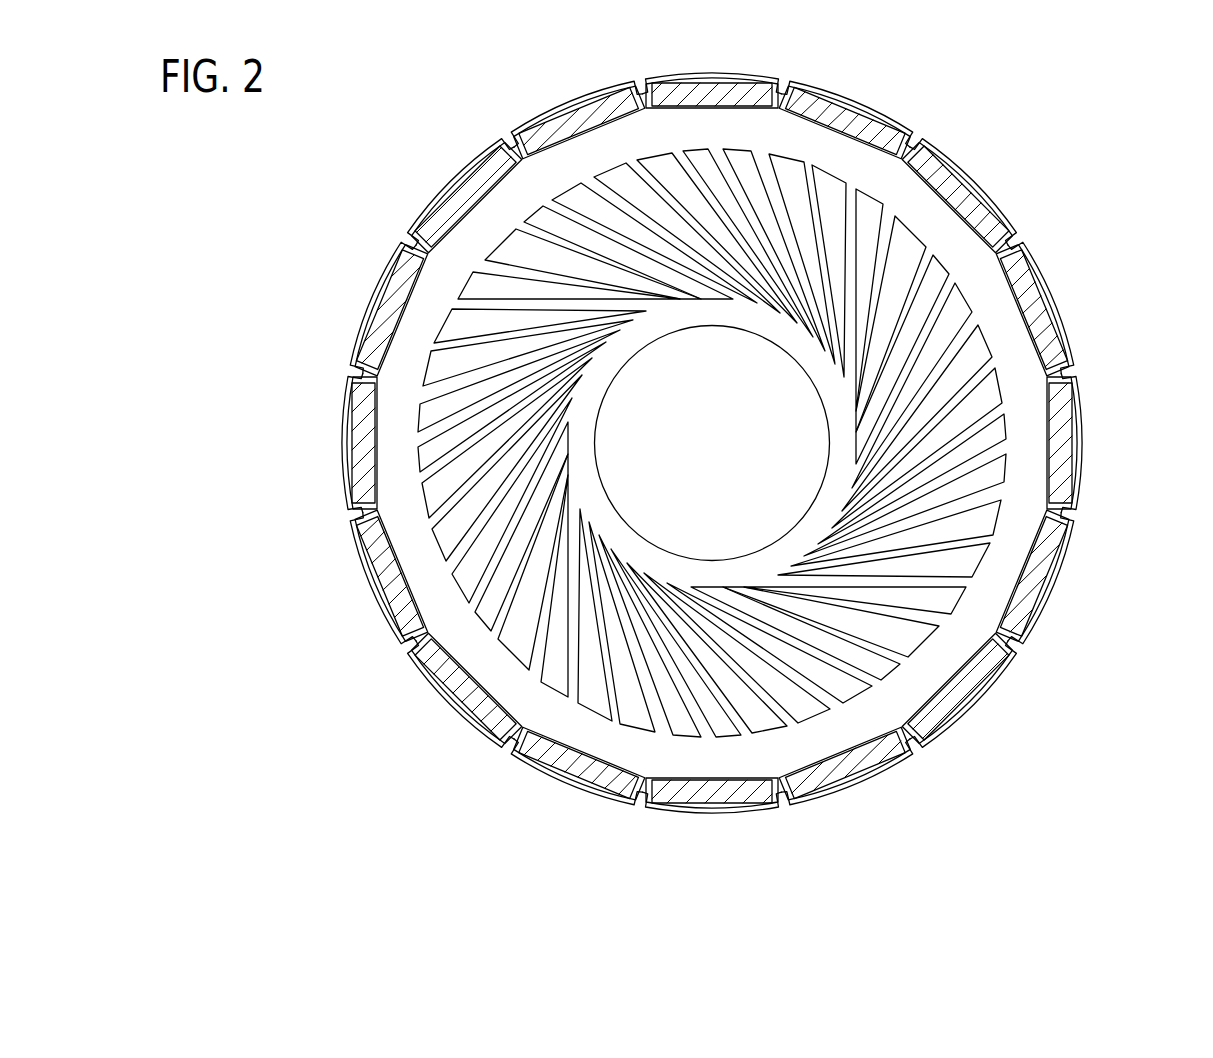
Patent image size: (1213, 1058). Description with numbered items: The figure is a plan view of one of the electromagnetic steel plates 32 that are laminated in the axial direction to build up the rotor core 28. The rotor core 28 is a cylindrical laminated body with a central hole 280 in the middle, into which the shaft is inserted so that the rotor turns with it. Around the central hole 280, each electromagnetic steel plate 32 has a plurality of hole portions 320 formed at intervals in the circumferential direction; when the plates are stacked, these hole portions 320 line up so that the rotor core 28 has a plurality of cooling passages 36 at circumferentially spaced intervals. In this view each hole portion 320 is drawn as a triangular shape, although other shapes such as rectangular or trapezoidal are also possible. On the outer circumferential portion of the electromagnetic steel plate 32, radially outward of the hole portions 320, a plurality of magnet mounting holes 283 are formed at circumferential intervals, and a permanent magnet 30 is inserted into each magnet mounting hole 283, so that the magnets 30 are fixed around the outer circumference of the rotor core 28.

The rotor core 28 is at (431, 166).
The magnet 30 is at (885, 127).
The electromagnetic steel plate 32 is at (1030, 460).
The cooling passage 36 is at (710, 448).
The central hole 280 is at (808, 507).
The magnet mounting hole 283 is at (849, 117).
The hole portion 320 is at (455, 320).